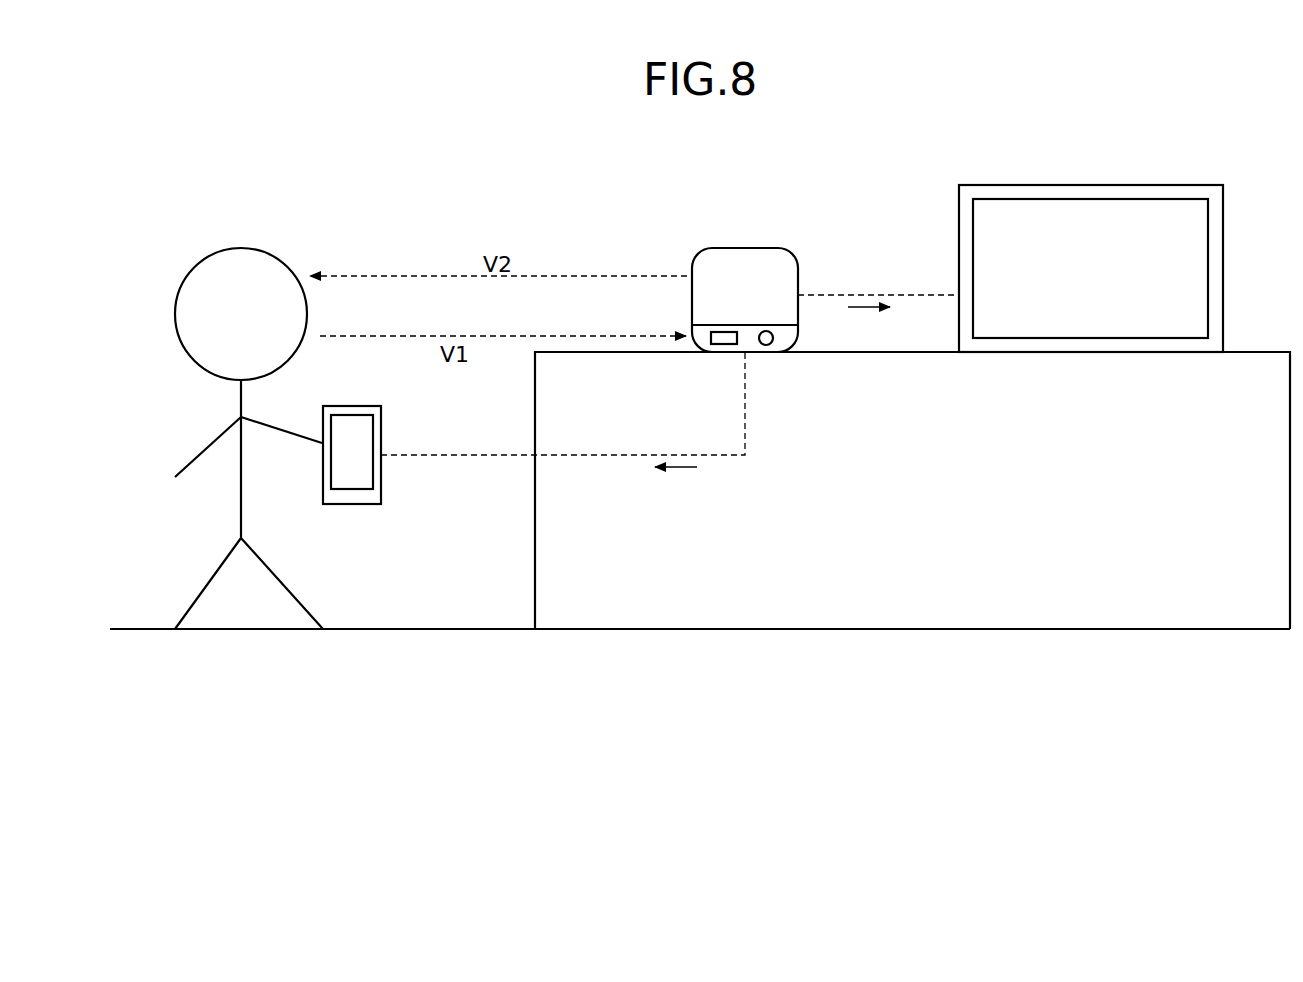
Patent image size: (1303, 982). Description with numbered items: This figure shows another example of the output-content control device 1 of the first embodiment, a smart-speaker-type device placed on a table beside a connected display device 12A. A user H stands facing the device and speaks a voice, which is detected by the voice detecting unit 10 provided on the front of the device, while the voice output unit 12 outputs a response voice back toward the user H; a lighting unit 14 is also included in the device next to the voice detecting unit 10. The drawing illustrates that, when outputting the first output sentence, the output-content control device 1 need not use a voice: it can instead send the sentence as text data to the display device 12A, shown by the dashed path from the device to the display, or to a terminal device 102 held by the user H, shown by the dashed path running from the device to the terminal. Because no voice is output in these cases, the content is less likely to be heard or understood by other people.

The output-content control device 1 is at (776, 268).
The voice detecting unit 10 is at (722, 332).
The voice output unit 12 is at (798, 264).
The display device 12A is at (1097, 185).
The lighting unit 14 is at (763, 325).
The terminal device 102 is at (351, 406).
The user H is at (282, 238).